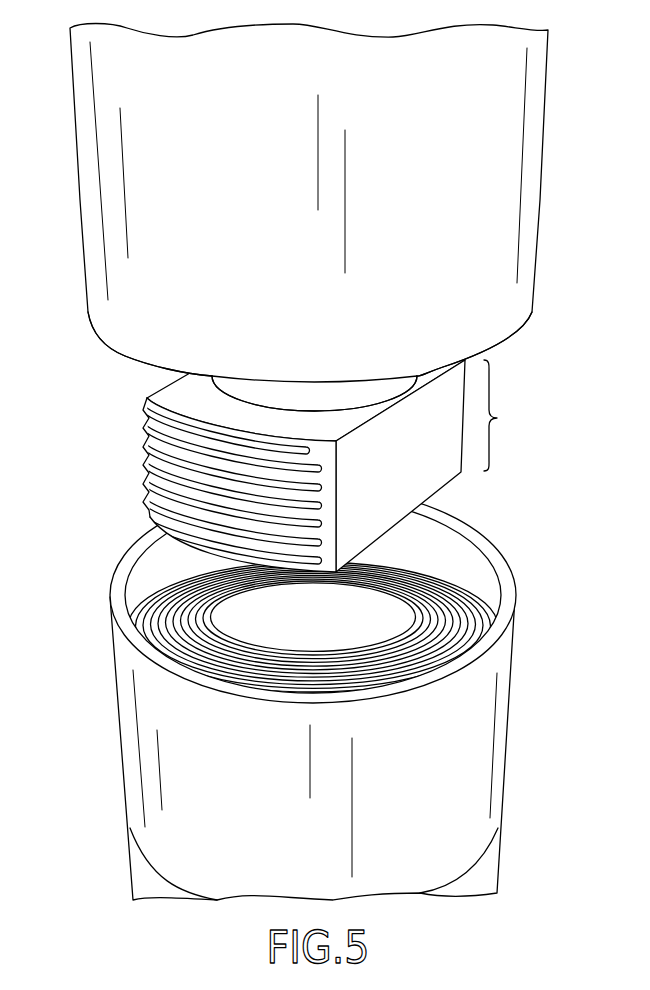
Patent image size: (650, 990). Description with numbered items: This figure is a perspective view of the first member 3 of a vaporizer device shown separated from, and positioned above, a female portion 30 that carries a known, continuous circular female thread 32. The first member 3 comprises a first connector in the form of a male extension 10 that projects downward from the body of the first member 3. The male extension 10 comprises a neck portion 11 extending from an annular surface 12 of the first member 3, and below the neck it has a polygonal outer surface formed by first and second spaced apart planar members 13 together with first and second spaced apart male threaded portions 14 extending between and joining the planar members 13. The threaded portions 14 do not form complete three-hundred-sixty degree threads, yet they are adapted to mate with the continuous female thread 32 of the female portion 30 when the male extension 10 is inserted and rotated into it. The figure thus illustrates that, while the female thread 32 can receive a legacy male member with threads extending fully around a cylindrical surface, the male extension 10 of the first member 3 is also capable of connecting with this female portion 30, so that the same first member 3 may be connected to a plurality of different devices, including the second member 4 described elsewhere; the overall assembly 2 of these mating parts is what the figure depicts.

The container closure assembly 2 is at (332, 462).
The first member 3 is at (315, 218).
The second member 4 is at (458, 842).
The first connector 10 is at (262, 466).
The neck portion 11 is at (261, 388).
The annular surface 12 is at (122, 349).
The planar members 13 is at (160, 389).
The male threaded portions 14 is at (117, 447).
The female portion 30 is at (512, 592).
The female thread 32 is at (207, 660).